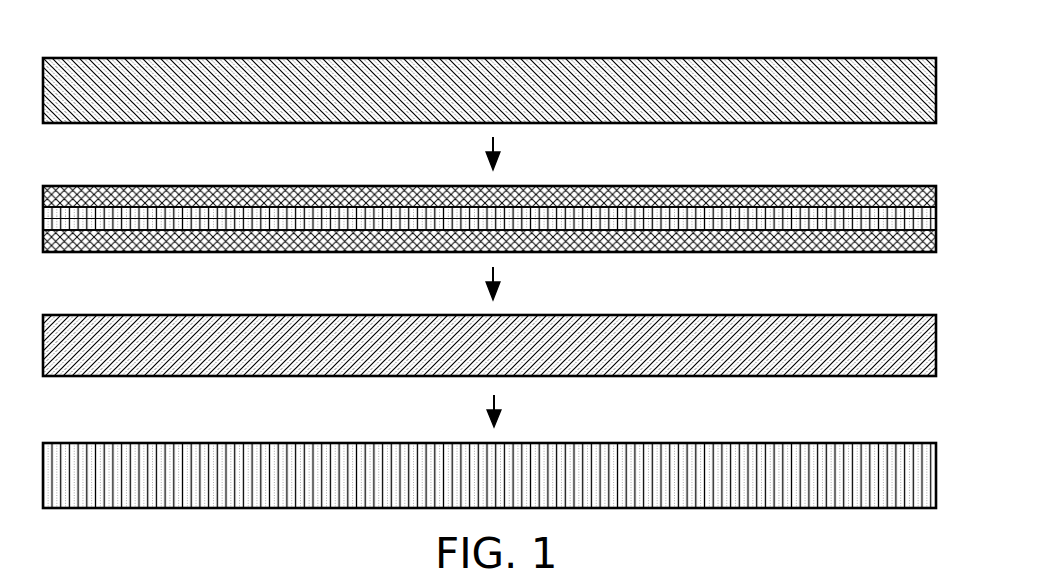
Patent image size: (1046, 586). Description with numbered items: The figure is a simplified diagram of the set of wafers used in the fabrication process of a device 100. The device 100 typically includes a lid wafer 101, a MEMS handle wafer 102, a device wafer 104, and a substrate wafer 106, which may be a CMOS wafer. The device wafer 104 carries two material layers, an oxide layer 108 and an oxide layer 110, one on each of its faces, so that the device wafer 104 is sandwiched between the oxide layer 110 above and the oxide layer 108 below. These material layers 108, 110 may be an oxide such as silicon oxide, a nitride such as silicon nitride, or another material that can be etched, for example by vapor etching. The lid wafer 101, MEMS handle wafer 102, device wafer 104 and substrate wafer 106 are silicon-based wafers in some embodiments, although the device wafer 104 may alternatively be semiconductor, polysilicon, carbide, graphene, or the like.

The device 100 is at (819, 51).
The lid wafer 101 is at (897, 100).
The MEMS handle wafer 102 is at (898, 356).
The device wafer 104 is at (840, 228).
The substrate wafer 106 is at (898, 485).
The oxide layer 108 is at (489, 241).
The oxide layer 110 is at (489, 196).